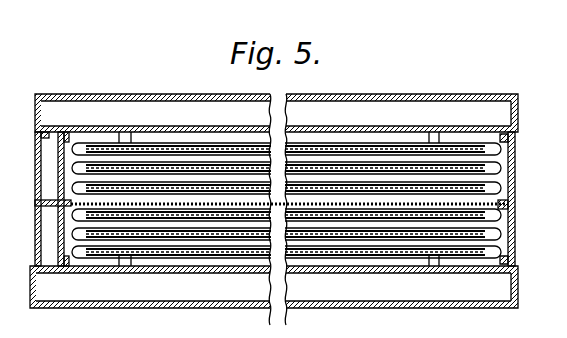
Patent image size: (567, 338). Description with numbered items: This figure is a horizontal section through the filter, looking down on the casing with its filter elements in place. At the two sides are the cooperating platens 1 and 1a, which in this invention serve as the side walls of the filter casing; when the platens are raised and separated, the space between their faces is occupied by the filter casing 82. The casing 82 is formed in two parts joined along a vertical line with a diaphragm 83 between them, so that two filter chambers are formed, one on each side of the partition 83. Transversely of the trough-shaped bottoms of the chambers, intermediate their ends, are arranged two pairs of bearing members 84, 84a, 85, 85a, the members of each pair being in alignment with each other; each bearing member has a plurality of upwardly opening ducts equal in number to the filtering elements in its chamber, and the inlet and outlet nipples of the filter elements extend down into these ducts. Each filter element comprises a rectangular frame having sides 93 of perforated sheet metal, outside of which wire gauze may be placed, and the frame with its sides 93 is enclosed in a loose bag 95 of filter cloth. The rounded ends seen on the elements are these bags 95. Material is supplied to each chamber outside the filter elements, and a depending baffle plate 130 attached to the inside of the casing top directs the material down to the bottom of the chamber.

The platen 1 is at (183, 87).
The platen 1a is at (274, 301).
The filter casing 82 is at (28, 148).
The diaphragm 83 is at (508, 193).
The bearing member 84 is at (116, 126).
The bearing member 84a is at (114, 258).
The bearing member 85 is at (424, 259).
The bearing member 85a is at (424, 132).
The sides 93 is at (66, 225).
The bag 95 is at (488, 185).
The baffle plate 130 is at (45, 205).